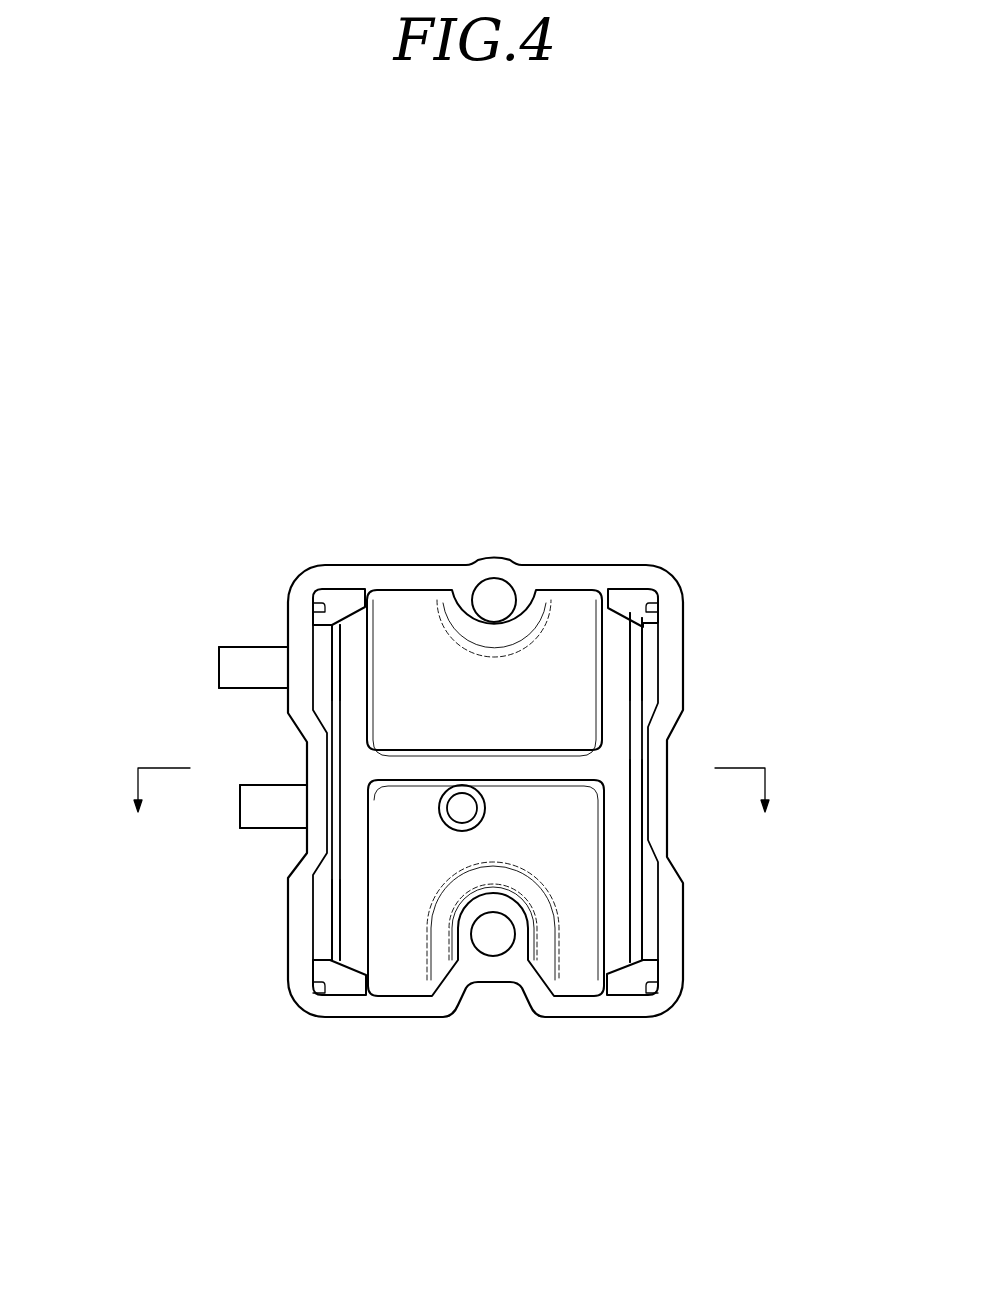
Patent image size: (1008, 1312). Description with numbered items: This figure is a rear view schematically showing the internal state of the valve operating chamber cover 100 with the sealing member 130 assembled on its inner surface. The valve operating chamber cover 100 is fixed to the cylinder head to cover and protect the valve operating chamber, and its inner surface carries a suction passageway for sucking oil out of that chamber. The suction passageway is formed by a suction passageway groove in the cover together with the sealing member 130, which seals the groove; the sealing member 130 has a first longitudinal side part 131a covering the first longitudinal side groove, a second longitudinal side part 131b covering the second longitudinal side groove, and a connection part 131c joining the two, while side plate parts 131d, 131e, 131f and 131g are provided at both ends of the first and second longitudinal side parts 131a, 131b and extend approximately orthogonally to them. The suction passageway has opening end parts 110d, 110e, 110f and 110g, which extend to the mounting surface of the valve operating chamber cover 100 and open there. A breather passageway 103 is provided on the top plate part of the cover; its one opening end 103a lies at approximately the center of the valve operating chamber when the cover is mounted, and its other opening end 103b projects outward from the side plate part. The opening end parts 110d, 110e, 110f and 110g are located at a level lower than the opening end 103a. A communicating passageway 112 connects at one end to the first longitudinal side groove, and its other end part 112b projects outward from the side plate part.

The valve operating chamber cover 100 is at (583, 565).
The breather passageway 103 is at (267, 813).
The opening end 103a is at (462, 814).
The opening end 103b is at (240, 814).
The opening end part 110d is at (320, 600).
The opening end part 110e is at (325, 985).
The opening end part 110f is at (657, 988).
The opening end part 110g is at (657, 596).
The communicating passageway 112 is at (238, 657).
The other end part 112b is at (219, 668).
The sealing member 130 is at (640, 702).
The first longitudinal side part 131a is at (355, 762).
The second longitudinal side part 131b is at (618, 837).
The connection part 131c is at (412, 768).
The side plate part 131d is at (344, 598).
The side plate part 131e is at (346, 983).
The side plate part 131f is at (623, 982).
The side plate part 131g is at (632, 598).